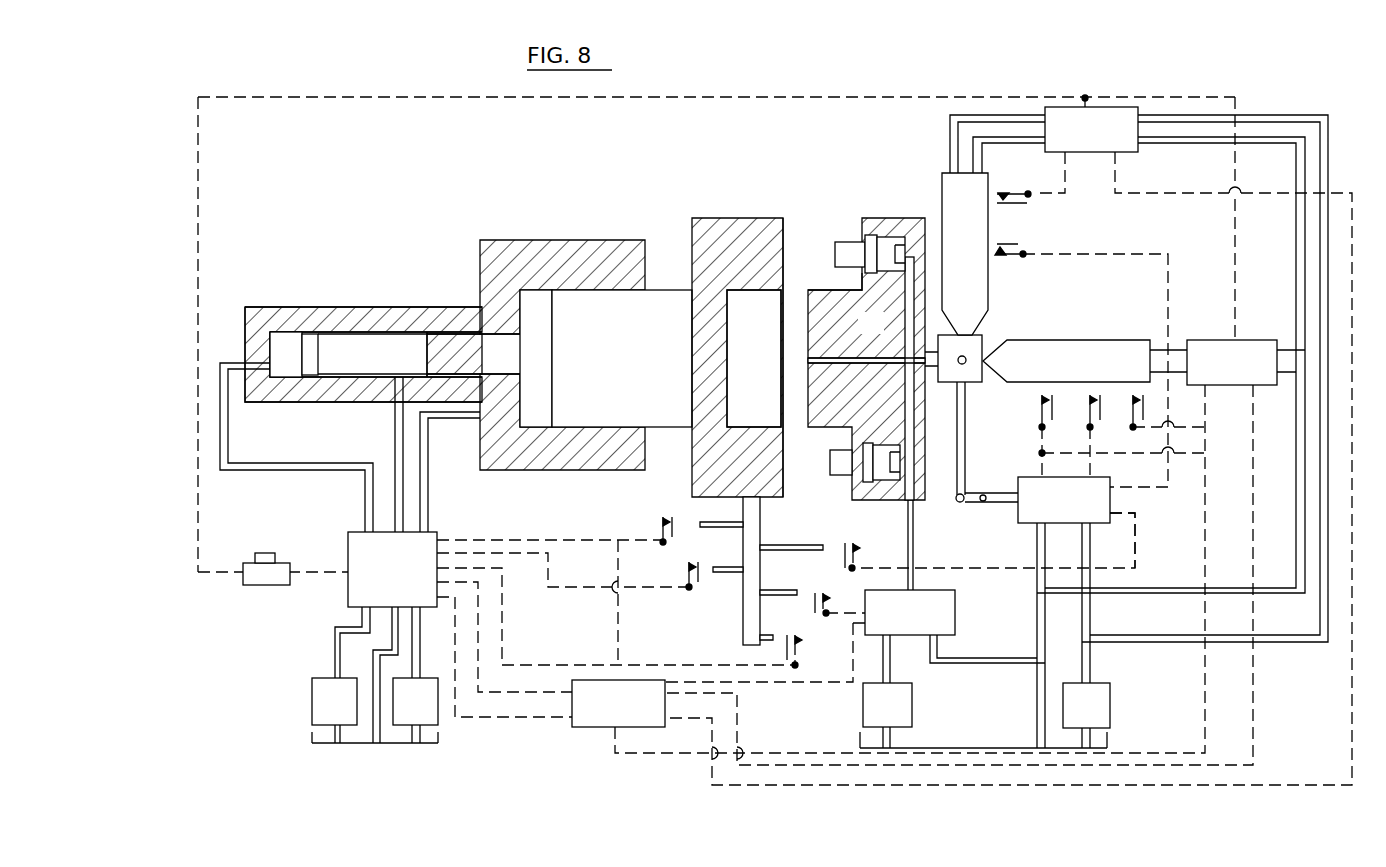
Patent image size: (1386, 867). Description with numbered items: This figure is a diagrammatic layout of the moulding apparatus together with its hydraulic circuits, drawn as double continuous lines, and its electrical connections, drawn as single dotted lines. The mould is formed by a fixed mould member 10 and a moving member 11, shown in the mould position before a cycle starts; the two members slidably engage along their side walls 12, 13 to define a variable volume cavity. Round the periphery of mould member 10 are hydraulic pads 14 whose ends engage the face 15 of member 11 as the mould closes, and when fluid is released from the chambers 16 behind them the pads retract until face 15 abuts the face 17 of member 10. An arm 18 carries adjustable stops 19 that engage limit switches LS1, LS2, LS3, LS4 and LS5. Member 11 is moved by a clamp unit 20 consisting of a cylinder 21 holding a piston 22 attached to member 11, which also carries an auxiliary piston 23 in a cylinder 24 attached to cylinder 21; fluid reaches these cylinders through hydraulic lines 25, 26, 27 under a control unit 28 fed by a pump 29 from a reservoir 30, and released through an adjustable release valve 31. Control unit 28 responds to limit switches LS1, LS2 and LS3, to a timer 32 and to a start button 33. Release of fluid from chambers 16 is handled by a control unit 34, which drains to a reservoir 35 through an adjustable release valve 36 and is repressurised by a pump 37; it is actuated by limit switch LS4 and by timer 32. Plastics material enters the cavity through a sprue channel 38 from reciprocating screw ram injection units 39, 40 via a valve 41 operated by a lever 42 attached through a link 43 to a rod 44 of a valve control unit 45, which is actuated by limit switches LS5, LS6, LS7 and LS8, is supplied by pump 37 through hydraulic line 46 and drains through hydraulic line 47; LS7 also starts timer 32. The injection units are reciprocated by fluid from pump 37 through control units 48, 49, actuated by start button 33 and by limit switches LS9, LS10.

The fixed mould member 10 is at (866, 359).
The moving mould member 11 is at (740, 240).
The side wall 12 is at (812, 289).
The side wall 13 is at (757, 292).
The hydraulic pad 14 is at (838, 245).
The face 15 is at (784, 252).
The chamber 16 is at (887, 250).
The face 17 is at (867, 240).
The arm 18 is at (752, 536).
The adjustable stop 19 is at (708, 528).
The clamp unit 20 is at (455, 219).
The cylinder 21 is at (590, 260).
The piston 22 is at (661, 308).
The auxiliary piston 23 is at (309, 340).
The cylinder 24 is at (403, 322).
The hydraulic line 25 is at (432, 498).
The hydraulic line 26 is at (395, 435).
The hydraulic line 27 is at (228, 435).
The control unit 28 is at (386, 637).
The pump 29 is at (334, 710).
The reservoir 30 is at (370, 743).
The adjustable release valve 31 is at (415, 710).
The timer 32 is at (618, 703).
The start button 33 is at (272, 585).
The control unit 34 is at (955, 636).
The reservoir 35 is at (972, 748).
The adjustable release valve 36 is at (886, 715).
The pump 37 is at (1086, 715).
The sprue channel 38 is at (850, 364).
The injection unit 39 is at (1085, 361).
The injection unit 40 is at (993, 225).
The valve 41 is at (970, 350).
The lever 42 is at (966, 452).
The link 43 is at (962, 502).
The rod 44 is at (1000, 502).
The valve control unit 45 is at (1064, 580).
The hydraulic line 46 is at (1093, 557).
The hydraulic line 47 is at (1037, 557).
The control unit 48 is at (1246, 362).
The control unit 49 is at (1182, 368).
The limit switch LS1 is at (813, 651).
The limit switch LS2 is at (665, 576).
The limit switch LS3 is at (634, 531).
The limit switch LS4 is at (835, 590).
The limit switch LS5 is at (862, 545).
The limit switch LS6 is at (1072, 425).
The limit switch LS7 is at (1019, 425).
The limit switch LS8 is at (1016, 261).
The limit switch LS9 is at (1123, 425).
The limit switch LS10 is at (1024, 185).